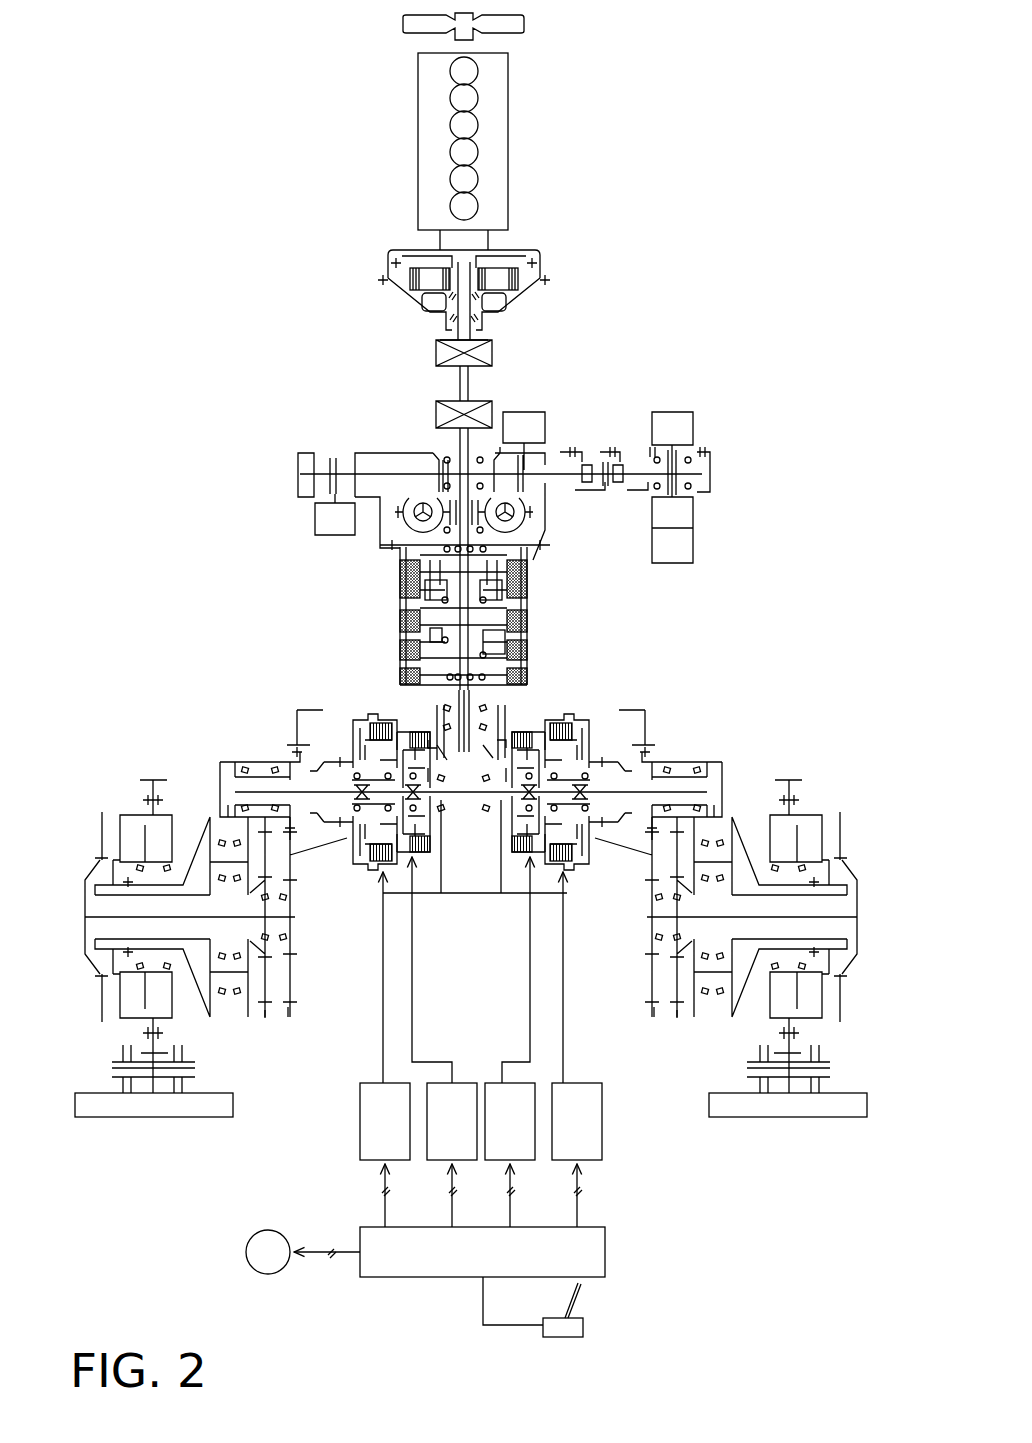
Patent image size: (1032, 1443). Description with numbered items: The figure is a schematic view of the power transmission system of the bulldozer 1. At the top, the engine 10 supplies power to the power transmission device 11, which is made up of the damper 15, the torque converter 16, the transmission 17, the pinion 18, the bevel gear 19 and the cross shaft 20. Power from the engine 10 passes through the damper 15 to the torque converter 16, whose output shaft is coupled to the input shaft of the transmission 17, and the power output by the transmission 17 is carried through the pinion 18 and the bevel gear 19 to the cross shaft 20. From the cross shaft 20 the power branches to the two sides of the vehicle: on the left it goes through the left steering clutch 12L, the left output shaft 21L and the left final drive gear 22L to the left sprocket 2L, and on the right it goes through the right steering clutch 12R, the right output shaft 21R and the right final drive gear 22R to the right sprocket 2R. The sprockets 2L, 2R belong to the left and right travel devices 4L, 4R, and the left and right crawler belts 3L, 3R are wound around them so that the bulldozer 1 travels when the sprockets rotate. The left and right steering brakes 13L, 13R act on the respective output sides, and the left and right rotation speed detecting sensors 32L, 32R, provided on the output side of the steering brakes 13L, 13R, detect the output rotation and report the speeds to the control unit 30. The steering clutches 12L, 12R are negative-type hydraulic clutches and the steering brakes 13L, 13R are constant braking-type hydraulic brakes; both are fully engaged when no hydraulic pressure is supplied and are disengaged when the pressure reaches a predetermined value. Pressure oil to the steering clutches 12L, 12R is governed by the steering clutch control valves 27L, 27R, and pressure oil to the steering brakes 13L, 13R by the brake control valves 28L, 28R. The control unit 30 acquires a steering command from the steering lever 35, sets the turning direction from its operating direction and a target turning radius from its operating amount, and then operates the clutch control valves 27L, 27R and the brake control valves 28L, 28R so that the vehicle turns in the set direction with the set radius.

The bulldozer 1 is at (270, 173).
The engine 10 is at (510, 150).
The power transmission device 11 is at (674, 262).
The damper 15 is at (542, 258).
The torque converter 16 is at (400, 514).
The transmission 17 is at (395, 590).
The pinion 18 is at (456, 760).
The bevel gear 19 is at (490, 842).
The cross shaft 20 is at (464, 795).
The left steering clutch 12L is at (413, 728).
The right steering clutch 12R is at (530, 725).
The left steering brake 13L is at (368, 720).
The right steering brake 13R is at (594, 722).
The left output shaft 21L is at (303, 790).
The right output shaft 21R is at (642, 790).
The left rotation speed detecting sensor 32L is at (375, 848).
The right rotation speed detecting sensor 32R is at (567, 848).
The left travel device 4L is at (72, 950).
The right travel device 4R is at (874, 1003).
The left final drive gear 22L is at (270, 1025).
The right final drive gear 22R is at (678, 1025).
The left sprocket 2L is at (140, 1033).
The right sprocket 2R is at (802, 1033).
The left crawler belt 3L is at (152, 1118).
The right crawler belt 3R is at (790, 1118).
The left steering clutch control valve 27L is at (445, 1163).
The right steering clutch control valve 27R is at (522, 1163).
The left brake control valve 28L is at (368, 1163).
The right brake control valve 28R is at (590, 1163).
The control unit 30 is at (605, 1252).
The steering lever 35 is at (585, 1330).